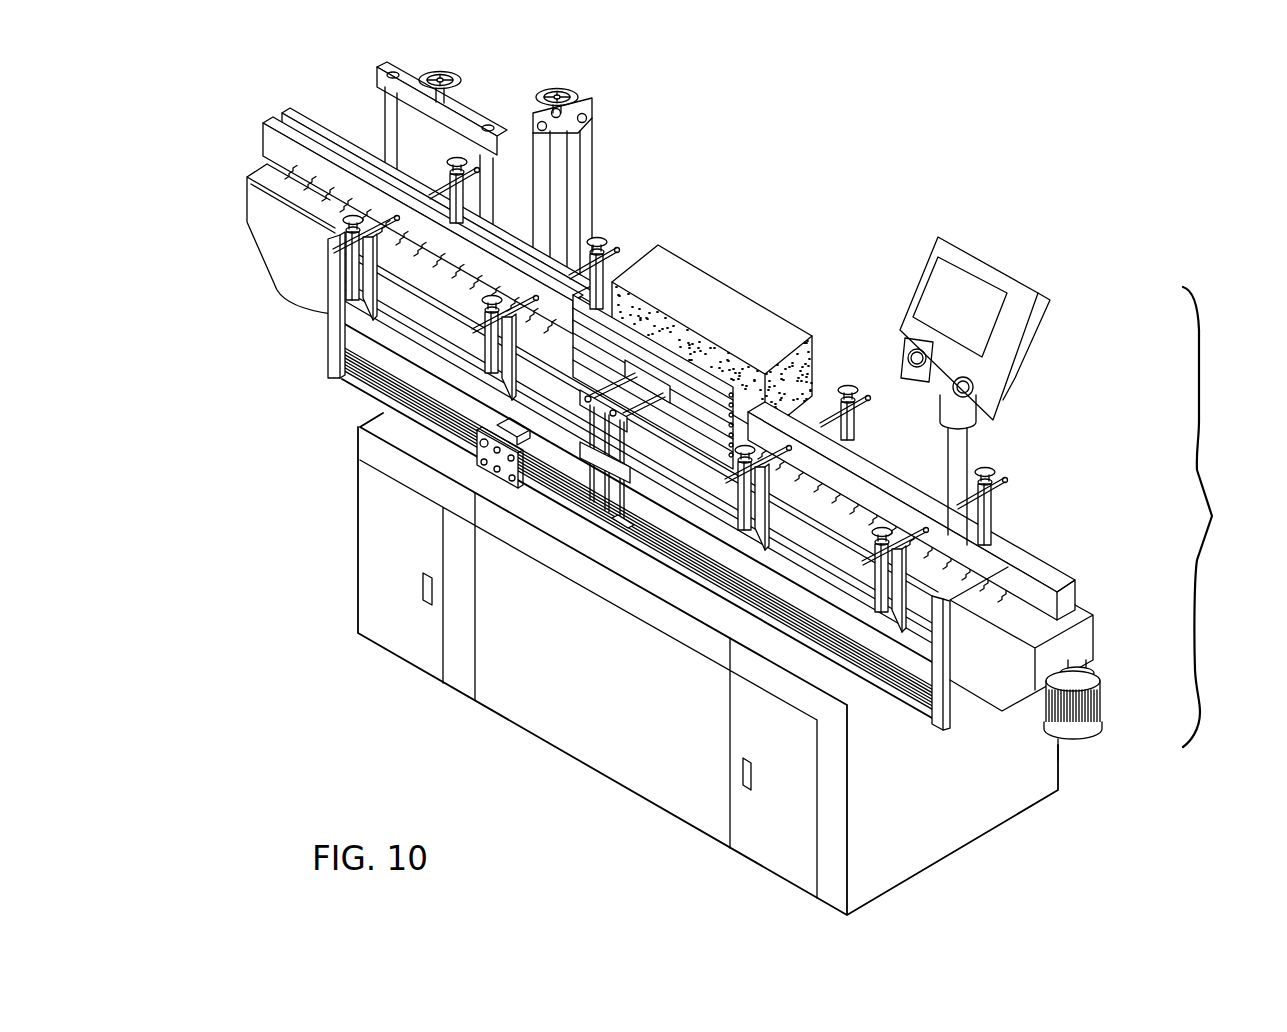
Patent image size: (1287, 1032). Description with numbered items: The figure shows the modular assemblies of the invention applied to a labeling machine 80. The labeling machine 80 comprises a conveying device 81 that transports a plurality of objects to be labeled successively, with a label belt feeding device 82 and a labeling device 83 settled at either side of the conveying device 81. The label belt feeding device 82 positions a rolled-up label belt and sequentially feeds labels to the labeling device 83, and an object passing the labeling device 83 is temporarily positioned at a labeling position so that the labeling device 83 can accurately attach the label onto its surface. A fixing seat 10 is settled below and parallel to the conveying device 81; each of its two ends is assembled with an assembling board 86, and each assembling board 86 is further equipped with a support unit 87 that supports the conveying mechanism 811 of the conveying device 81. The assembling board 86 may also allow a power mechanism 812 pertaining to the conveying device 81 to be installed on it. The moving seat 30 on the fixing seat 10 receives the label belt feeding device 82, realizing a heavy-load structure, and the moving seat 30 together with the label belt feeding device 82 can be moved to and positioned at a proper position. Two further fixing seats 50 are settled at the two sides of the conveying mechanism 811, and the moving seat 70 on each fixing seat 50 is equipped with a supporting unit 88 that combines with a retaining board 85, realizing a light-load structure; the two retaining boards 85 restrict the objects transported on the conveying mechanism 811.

The fixing seat 10 is at (887, 690).
The moving seat 30 is at (518, 482).
The fixing seat 50 is at (846, 604).
The moving seat 70 is at (753, 548).
The labeling machine 80 is at (1074, 492).
The conveying device 81 is at (307, 114).
The conveying mechanism 811 is at (256, 203).
The power mechanism 812 is at (1093, 712).
The label belt feeding device 82 is at (601, 157).
The labeling device 83 is at (733, 308).
The retaining board 85 is at (898, 505).
The assembling board 86 is at (353, 340).
The support unit 87 is at (330, 278).
The supporting unit 88 is at (763, 467).